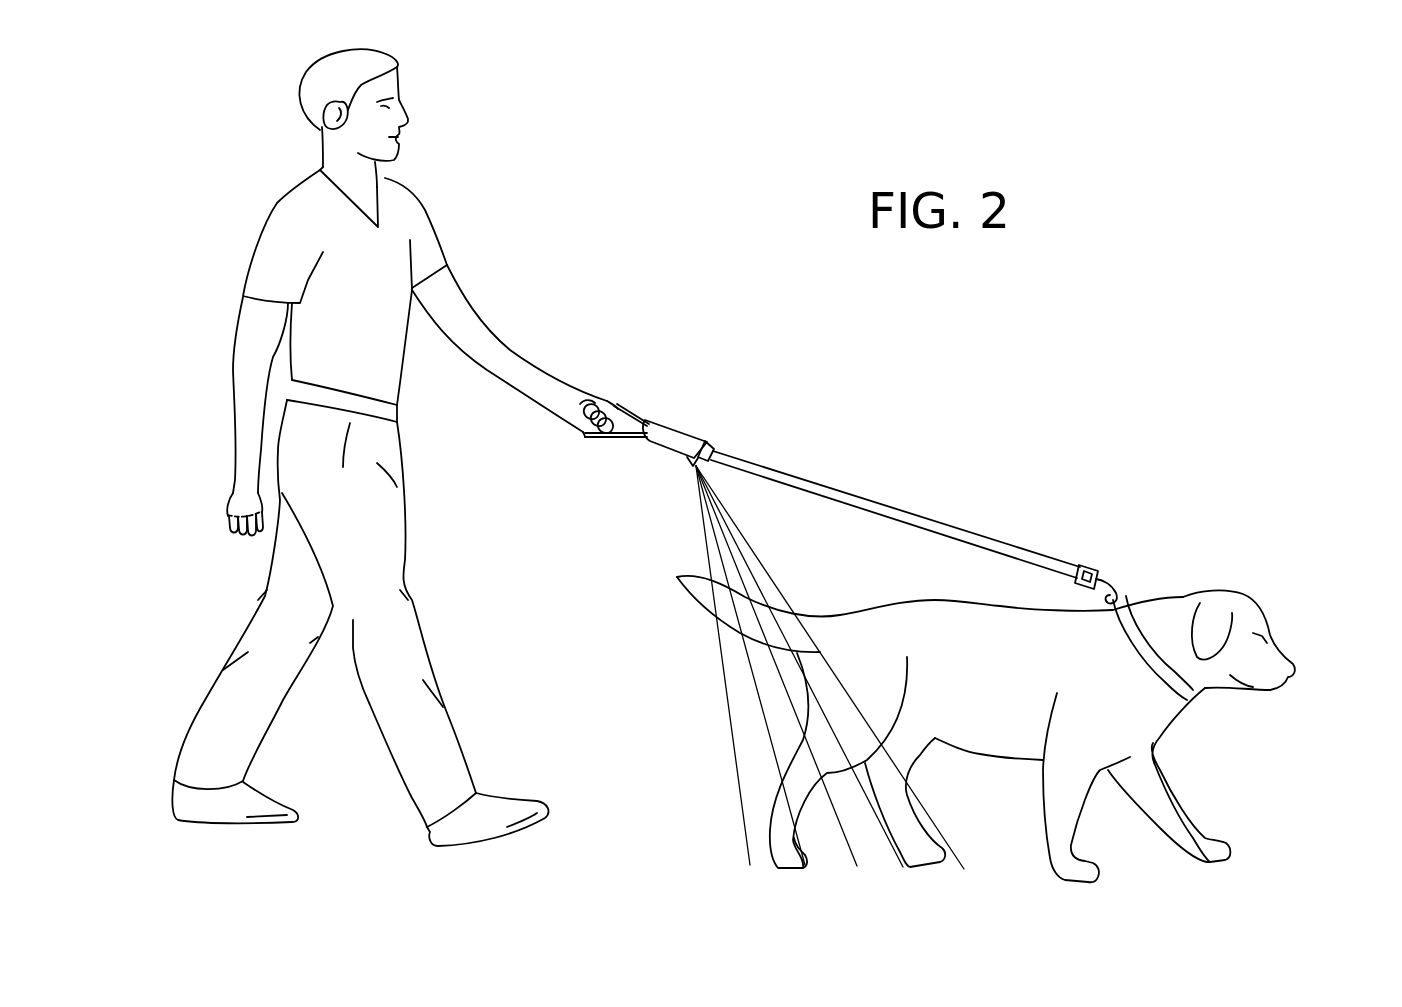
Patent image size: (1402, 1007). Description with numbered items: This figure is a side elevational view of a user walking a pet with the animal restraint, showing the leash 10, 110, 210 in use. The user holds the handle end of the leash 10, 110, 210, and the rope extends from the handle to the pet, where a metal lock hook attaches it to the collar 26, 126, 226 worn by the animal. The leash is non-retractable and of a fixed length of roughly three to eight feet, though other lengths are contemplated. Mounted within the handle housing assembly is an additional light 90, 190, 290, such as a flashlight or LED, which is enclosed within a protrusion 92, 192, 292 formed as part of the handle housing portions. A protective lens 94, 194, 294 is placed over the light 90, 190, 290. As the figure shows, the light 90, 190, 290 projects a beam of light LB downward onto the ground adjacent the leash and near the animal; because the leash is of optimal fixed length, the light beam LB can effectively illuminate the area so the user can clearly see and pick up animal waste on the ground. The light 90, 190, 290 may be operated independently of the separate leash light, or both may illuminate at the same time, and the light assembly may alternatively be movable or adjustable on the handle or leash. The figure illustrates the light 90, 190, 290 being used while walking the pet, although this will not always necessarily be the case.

The leash 10 is at (922, 607).
The leash 110 is at (922, 607).
The leash 210 is at (720, 412).
The light 90 is at (763, 650).
The light 190 is at (763, 650).
The light 290 is at (763, 650).
The protective lens 94 is at (763, 650).
The protective lens 194 is at (763, 650).
The protective lens 294 is at (712, 463).
The protrusion 92 is at (594, 447).
The protrusion 192 is at (594, 447).
The protrusion 292 is at (690, 453).
The collar 26 is at (1238, 619).
The collar 126 is at (1238, 619).
The collar 226 is at (1130, 628).
The light beam LB is at (660, 560).